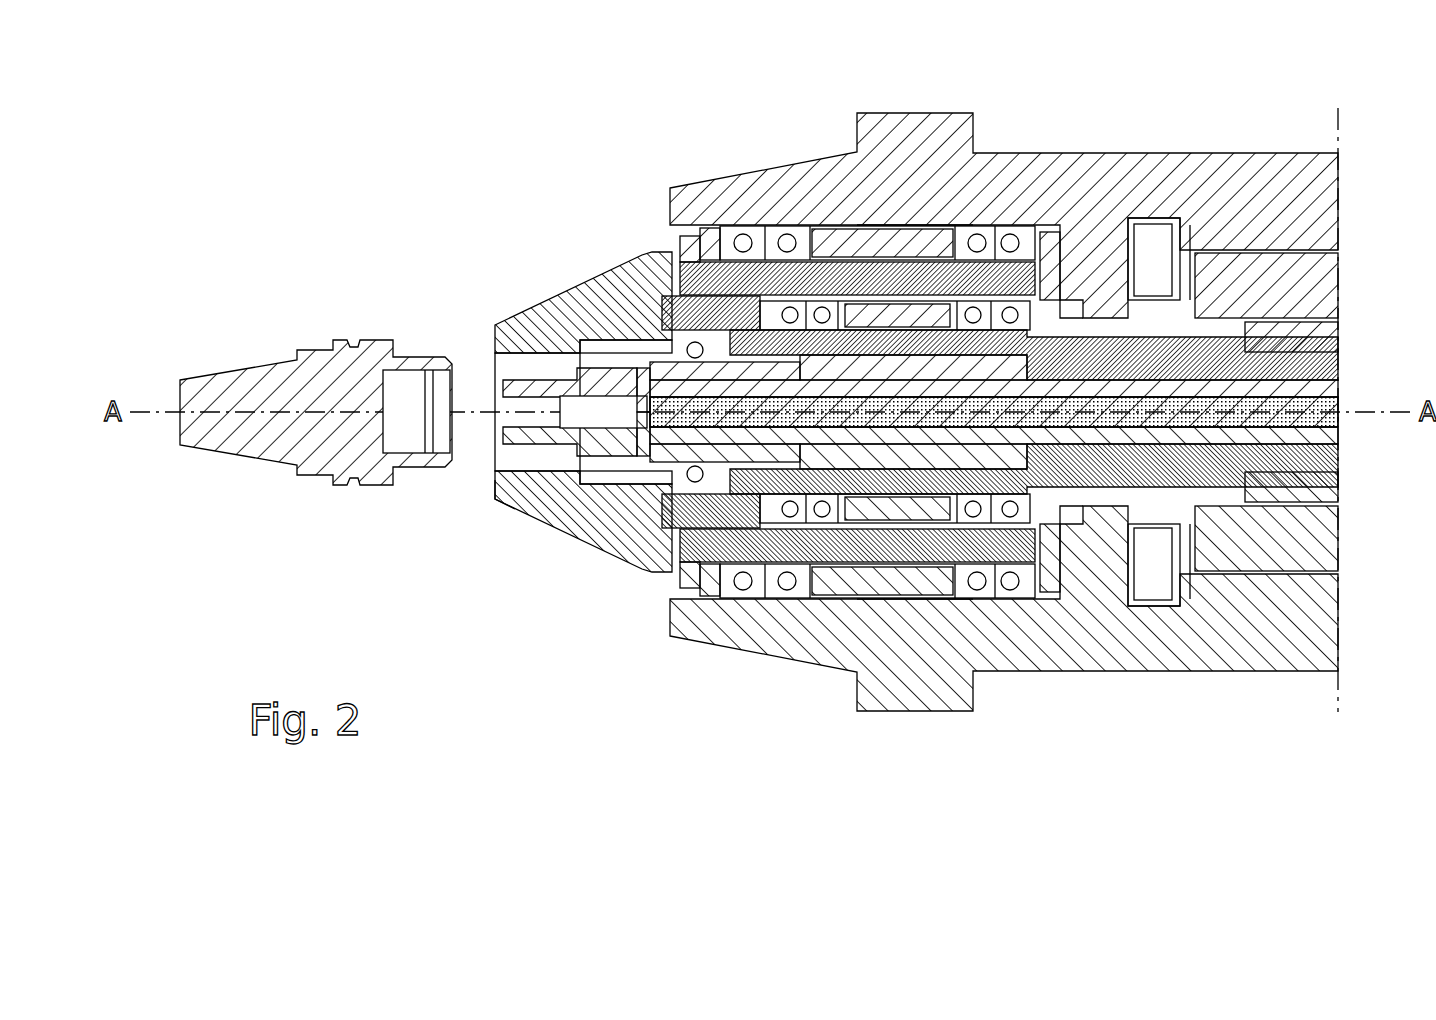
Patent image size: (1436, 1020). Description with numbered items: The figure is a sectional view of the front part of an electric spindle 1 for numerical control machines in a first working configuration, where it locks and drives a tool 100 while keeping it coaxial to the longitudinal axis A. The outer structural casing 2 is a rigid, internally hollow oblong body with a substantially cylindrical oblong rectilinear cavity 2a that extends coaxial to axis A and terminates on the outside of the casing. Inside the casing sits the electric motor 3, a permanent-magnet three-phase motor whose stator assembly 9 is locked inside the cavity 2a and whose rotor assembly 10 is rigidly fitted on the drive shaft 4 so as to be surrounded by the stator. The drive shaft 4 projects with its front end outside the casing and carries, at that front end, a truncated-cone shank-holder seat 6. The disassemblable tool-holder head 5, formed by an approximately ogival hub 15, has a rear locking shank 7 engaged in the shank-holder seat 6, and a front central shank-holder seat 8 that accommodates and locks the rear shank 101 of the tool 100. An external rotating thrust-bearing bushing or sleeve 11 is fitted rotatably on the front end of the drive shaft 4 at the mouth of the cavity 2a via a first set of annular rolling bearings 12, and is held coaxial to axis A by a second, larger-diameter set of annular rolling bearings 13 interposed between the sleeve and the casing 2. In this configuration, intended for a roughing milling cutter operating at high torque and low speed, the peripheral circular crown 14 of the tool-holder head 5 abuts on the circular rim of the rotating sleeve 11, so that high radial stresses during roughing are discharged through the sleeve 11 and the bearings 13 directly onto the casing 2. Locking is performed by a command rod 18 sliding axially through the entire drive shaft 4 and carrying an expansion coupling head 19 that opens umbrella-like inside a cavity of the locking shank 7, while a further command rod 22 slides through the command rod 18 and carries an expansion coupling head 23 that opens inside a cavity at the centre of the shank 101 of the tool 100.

The electric spindle 1 is at (358, 160).
The structural casing 2 is at (783, 185).
The oblong rectilinear cavity 2a is at (890, 230).
The electric motor 3 is at (1259, 215).
The drive shaft 4 is at (685, 270).
The tool-holder head 5 is at (568, 290).
The shank-holder seat 6 is at (612, 348).
The locking shank 7 is at (700, 583).
The central shank-holder seat 8 is at (515, 358).
The stator assembly 9 is at (1322, 258).
The rotor assembly 10 is at (1320, 328).
The rotating thrust-bearing bushing or sleeve 11 is at (700, 255).
The first set of annular rolling bearings 12 is at (1057, 275).
The second set of annular rolling bearings 13 is at (740, 235).
The peripheral circular crown 14 is at (703, 240).
The ogival hub 15 is at (510, 515).
The command rod 18 is at (1322, 390).
The expansion coupling head 19 is at (673, 478).
The command rod 22 is at (1328, 420).
The expansion coupling head 23 is at (500, 470).
The tool 100 is at (245, 380).
The rear shank 101 is at (420, 352).